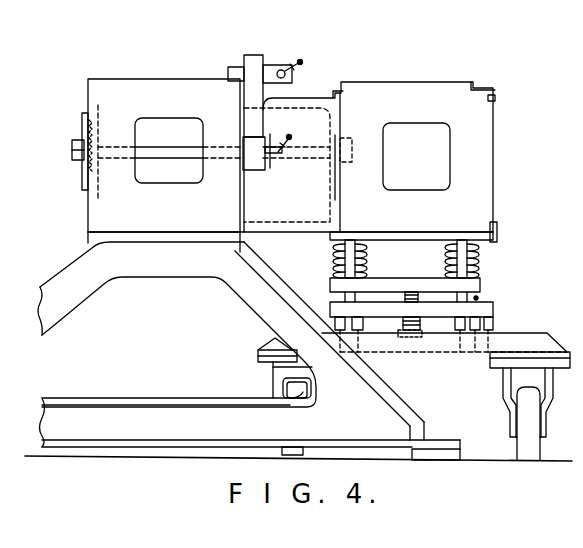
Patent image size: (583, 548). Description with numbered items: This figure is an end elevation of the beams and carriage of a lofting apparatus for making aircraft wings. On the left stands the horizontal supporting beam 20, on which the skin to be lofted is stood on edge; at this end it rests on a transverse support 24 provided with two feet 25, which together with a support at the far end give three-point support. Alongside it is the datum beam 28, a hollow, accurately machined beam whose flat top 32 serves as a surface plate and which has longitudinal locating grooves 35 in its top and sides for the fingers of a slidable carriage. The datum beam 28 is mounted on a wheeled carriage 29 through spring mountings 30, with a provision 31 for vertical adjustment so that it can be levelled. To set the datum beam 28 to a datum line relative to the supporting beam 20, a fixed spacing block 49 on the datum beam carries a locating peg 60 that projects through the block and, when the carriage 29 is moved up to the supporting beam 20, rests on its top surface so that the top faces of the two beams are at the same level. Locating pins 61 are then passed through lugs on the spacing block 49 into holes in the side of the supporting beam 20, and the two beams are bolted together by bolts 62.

The supporting beam 20 is at (123, 79).
The bolts 62 is at (180, 150).
The fixed spacing block 49 is at (262, 190).
The locating peg 60 is at (235, 70).
The locating pins 61 is at (265, 96).
The longitudinal locating grooves 35 is at (337, 84).
The flat top 32 is at (360, 81).
The datum beam 28 is at (480, 162).
The spring mountings 30 is at (338, 256).
The provision for vertical adjustment 31 is at (415, 296).
The wheeled carriage 29 is at (527, 340).
The transverse support 24 is at (103, 420).
The feet 25 is at (447, 455).